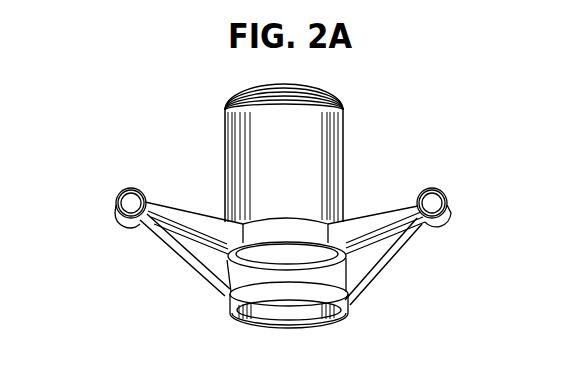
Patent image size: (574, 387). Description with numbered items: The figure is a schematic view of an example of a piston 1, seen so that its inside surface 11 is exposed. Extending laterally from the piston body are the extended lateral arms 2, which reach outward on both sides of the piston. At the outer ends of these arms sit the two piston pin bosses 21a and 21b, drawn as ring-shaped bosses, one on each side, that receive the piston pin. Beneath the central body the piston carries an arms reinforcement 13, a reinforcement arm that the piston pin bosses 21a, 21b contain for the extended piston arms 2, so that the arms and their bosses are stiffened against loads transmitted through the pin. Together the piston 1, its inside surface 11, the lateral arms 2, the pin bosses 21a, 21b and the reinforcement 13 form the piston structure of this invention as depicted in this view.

The piston 1 is at (290, 151).
The lateral arms 2 is at (415, 195).
The inside surface 11 is at (290, 257).
The arms reinforcement 13 is at (287, 290).
The piston pin boss 21a is at (130, 207).
The piston pin boss 21b is at (438, 213).